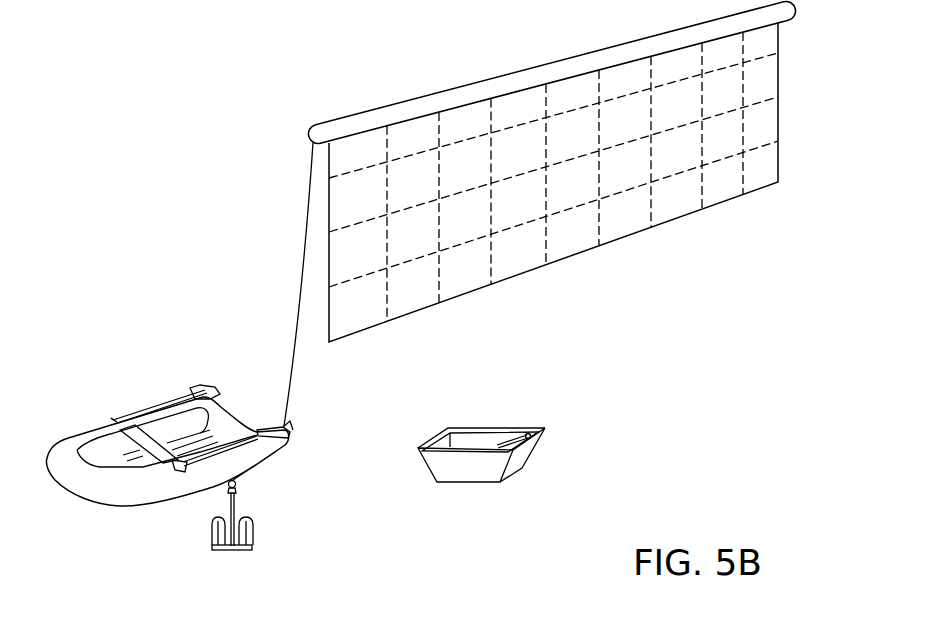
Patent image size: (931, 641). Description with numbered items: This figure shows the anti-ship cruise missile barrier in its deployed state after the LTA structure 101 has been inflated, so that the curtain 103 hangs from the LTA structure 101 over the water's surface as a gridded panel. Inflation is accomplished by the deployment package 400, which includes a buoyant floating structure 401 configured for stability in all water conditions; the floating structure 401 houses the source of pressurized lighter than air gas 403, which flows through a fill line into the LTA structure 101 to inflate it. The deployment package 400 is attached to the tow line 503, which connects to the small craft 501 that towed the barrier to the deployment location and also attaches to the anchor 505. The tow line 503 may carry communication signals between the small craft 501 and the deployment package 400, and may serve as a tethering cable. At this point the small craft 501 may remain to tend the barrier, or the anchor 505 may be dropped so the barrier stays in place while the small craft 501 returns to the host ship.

The LTA structure 101 is at (328, 125).
The curtain 103 is at (780, 112).
The tow line 503 is at (302, 275).
The small craft 501 is at (96, 433).
The anchor 505 is at (250, 533).
The deployment package 400 is at (506, 455).
The floating structure 401 is at (437, 483).
The source of pressurized lighter than air gas 403 is at (512, 443).